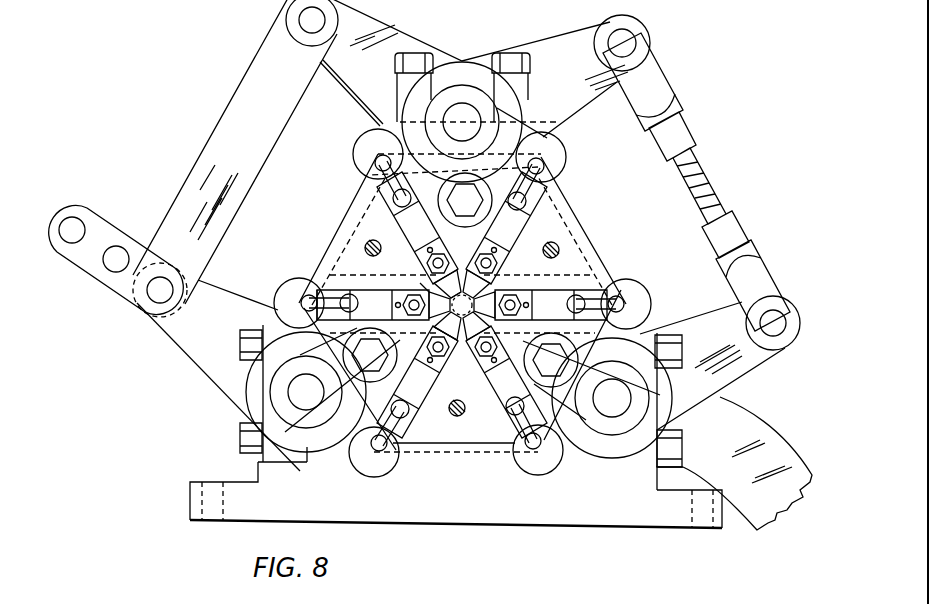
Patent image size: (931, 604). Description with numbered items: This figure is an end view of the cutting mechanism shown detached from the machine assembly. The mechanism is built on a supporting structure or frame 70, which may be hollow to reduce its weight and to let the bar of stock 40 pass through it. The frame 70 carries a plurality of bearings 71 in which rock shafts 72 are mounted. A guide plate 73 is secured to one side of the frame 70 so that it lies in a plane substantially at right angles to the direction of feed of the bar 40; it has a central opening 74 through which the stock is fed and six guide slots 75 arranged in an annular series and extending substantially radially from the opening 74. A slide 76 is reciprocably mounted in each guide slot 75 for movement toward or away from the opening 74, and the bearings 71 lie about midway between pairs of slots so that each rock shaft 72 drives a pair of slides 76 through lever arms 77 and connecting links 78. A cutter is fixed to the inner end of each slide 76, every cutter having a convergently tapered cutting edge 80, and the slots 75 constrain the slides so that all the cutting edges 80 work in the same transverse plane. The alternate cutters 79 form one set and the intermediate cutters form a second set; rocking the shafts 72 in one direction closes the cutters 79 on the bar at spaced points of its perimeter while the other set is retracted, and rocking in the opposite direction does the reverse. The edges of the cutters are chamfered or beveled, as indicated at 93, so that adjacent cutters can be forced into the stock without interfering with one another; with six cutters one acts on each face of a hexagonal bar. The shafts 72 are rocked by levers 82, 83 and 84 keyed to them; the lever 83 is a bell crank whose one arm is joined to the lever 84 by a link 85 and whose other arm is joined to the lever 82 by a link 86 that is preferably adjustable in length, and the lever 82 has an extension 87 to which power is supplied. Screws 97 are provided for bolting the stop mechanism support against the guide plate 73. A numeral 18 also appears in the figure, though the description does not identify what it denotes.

The supporting structure or frame 70 is at (520, 524).
The bearings 71 is at (458, 72).
The rock shafts 72 is at (468, 112).
The guide plate 73 is at (563, 218).
The central opening 74 is at (445, 330).
The guide slots 75 is at (570, 240).
The slides 76 is at (372, 275).
The lever arms 77 is at (532, 135).
The connecting links 78 is at (382, 178).
The cutters 79 is at (495, 258).
The cutting edge 80 is at (462, 305).
The arm 18 is at (354, 305).
The bar of stock 40 is at (450, 285).
The lever 82 is at (752, 365).
The lever 83 is at (558, 38).
The lever 84 is at (210, 293).
The link 85 is at (266, 158).
The link 86 is at (708, 168).
The extension 87 is at (773, 447).
The chamfered or beveled edges 93 is at (420, 283).
The screws 97 is at (367, 243).